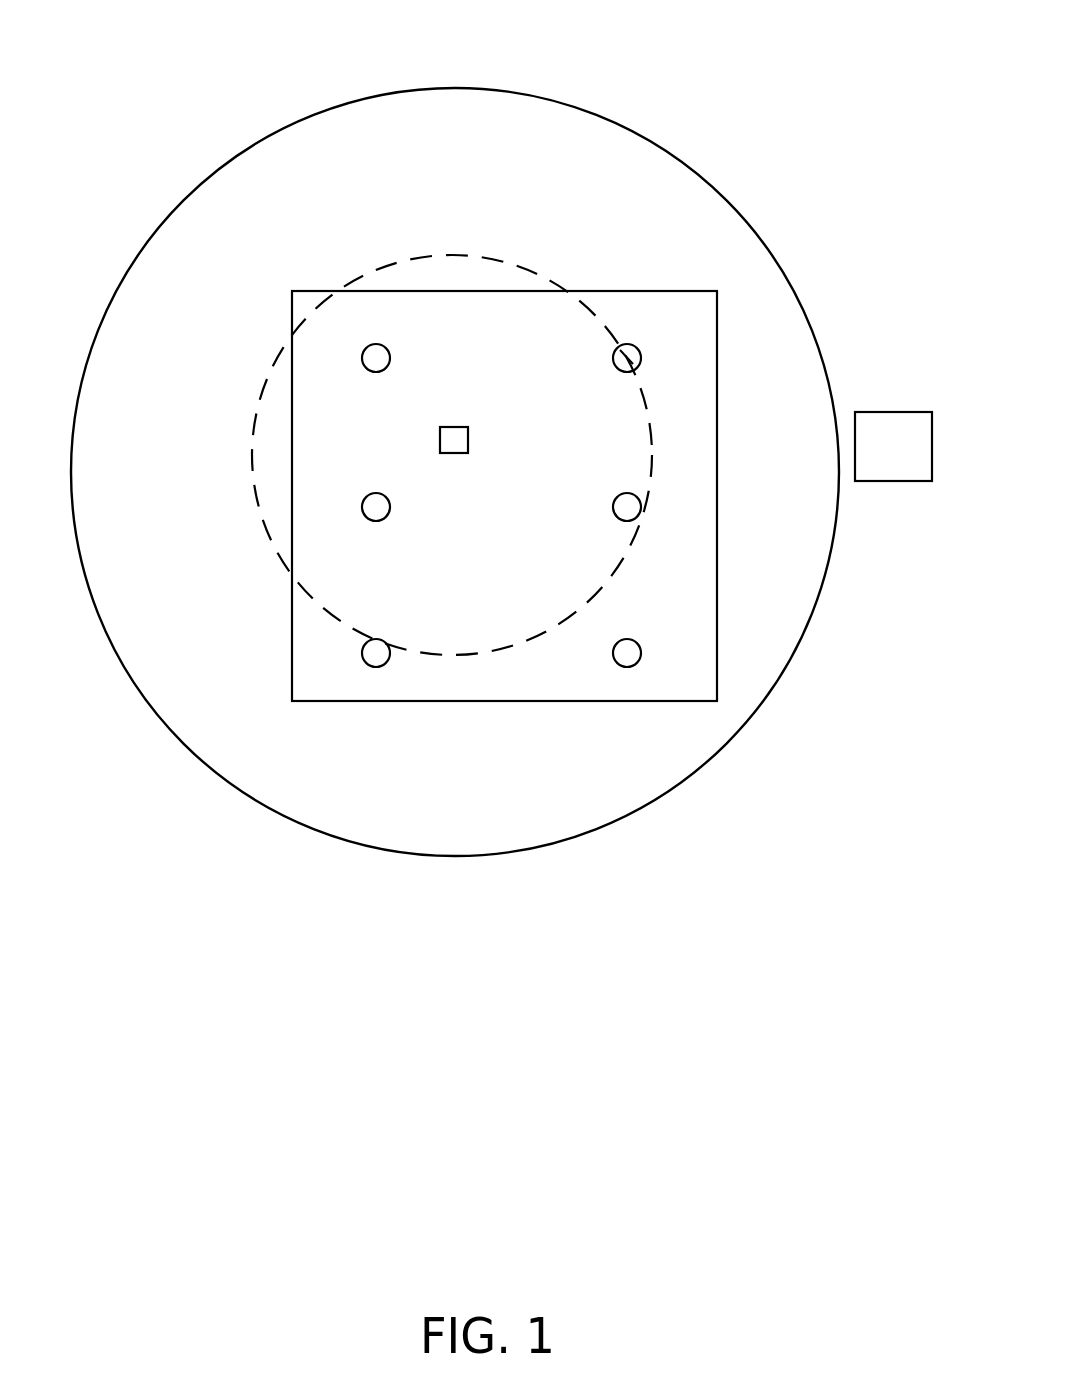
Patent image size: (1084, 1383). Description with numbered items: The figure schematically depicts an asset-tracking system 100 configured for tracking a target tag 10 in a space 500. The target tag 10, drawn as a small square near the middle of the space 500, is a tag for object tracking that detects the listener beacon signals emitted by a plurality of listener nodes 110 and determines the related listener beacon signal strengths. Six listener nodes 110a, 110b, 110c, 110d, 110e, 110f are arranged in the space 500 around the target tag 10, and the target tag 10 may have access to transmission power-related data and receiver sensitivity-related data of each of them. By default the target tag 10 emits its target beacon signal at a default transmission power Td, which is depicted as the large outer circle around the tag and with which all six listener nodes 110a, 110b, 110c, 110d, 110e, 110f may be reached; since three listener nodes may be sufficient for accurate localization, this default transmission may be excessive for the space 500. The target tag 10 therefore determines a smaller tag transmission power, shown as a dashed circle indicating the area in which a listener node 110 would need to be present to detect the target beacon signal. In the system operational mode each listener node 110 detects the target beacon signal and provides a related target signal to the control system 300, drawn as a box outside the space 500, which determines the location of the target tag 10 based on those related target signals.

The asset-tracking system 100 is at (788, 84).
The default transmission power Td is at (676, 156).
The space 500 is at (690, 606).
The control system 300 is at (922, 460).
The target tag 10 is at (440, 441).
The listener nodes 110 is at (641, 357).
The listener node 110a is at (390, 653).
The listener node 110b is at (390, 507).
The listener node 110c is at (613, 507).
The listener node 110d is at (613, 654).
The listener node 110e is at (390, 358).
The listener node 110f is at (613, 360).